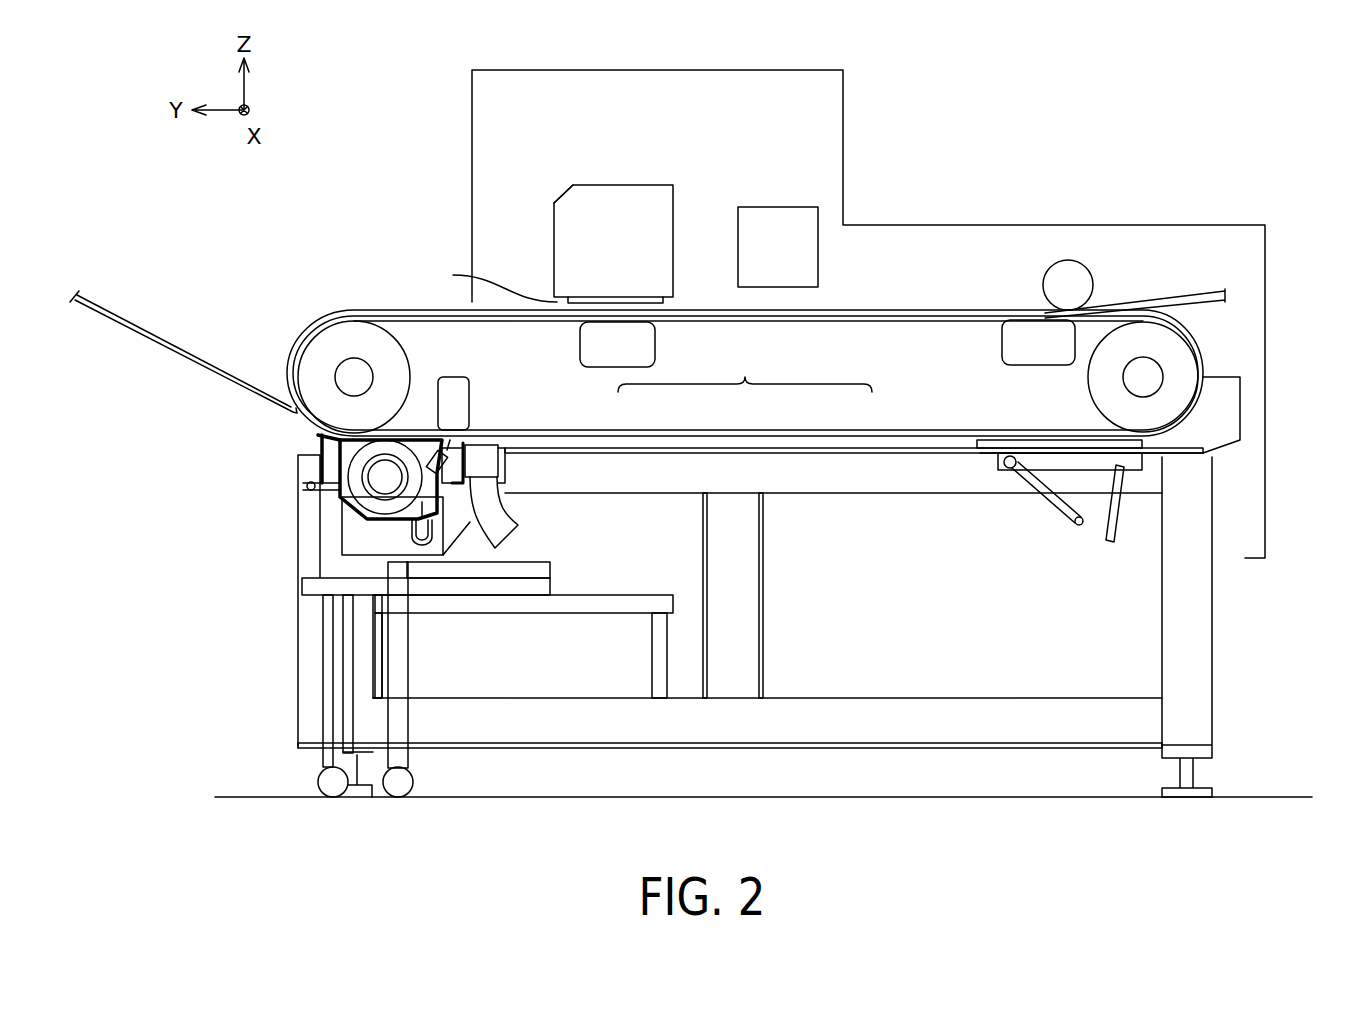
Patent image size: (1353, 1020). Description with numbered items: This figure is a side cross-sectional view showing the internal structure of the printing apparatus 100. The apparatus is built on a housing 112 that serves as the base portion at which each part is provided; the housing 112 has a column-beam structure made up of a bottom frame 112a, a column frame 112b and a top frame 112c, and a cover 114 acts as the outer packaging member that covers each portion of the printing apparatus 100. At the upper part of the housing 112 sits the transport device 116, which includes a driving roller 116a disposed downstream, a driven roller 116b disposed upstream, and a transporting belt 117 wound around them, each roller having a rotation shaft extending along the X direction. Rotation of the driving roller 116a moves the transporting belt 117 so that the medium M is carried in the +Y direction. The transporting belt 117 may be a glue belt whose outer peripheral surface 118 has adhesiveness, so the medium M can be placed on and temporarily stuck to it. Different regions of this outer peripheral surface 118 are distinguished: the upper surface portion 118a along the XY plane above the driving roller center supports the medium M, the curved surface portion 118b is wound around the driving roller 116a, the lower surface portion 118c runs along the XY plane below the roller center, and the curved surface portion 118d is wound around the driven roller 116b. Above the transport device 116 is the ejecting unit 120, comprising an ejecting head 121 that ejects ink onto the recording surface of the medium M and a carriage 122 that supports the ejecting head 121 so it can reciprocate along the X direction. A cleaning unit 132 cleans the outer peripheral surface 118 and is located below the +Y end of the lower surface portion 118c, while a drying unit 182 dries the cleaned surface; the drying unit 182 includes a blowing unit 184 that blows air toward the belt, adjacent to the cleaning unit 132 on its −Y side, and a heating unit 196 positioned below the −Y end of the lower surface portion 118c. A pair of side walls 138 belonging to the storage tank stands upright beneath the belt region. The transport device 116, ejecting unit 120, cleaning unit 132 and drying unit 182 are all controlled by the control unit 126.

The printing apparatus 100 is at (1134, 120).
The housing 112 is at (1212, 660).
The bottom frame 112a is at (920, 707).
The column frame 112b is at (747, 618).
The top frame 112c is at (828, 482).
The cover 114 is at (915, 226).
The transport device 116 is at (1195, 337).
The driving roller 116a is at (410, 353).
The driven roller 116b is at (1087, 382).
The transporting belt 117 is at (1205, 393).
The outer peripheral surface 118 is at (1203, 352).
The upper surface portion 118a is at (645, 303).
The curved surface portion 118b is at (307, 330).
The lower surface portion 118c is at (647, 433).
The curved surface portion 118d is at (1190, 410).
The ejecting unit 120 is at (620, 185).
The ejecting head 121 is at (483, 281).
The carriage 122 is at (565, 234).
The control unit 126 is at (780, 207).
The cleaning unit 132 is at (342, 512).
The side walls 138 is at (447, 482).
The drying unit 182 is at (745, 369).
The blowing unit 184 is at (500, 462).
The heating unit 196 is at (980, 463).
The medium M is at (193, 352).